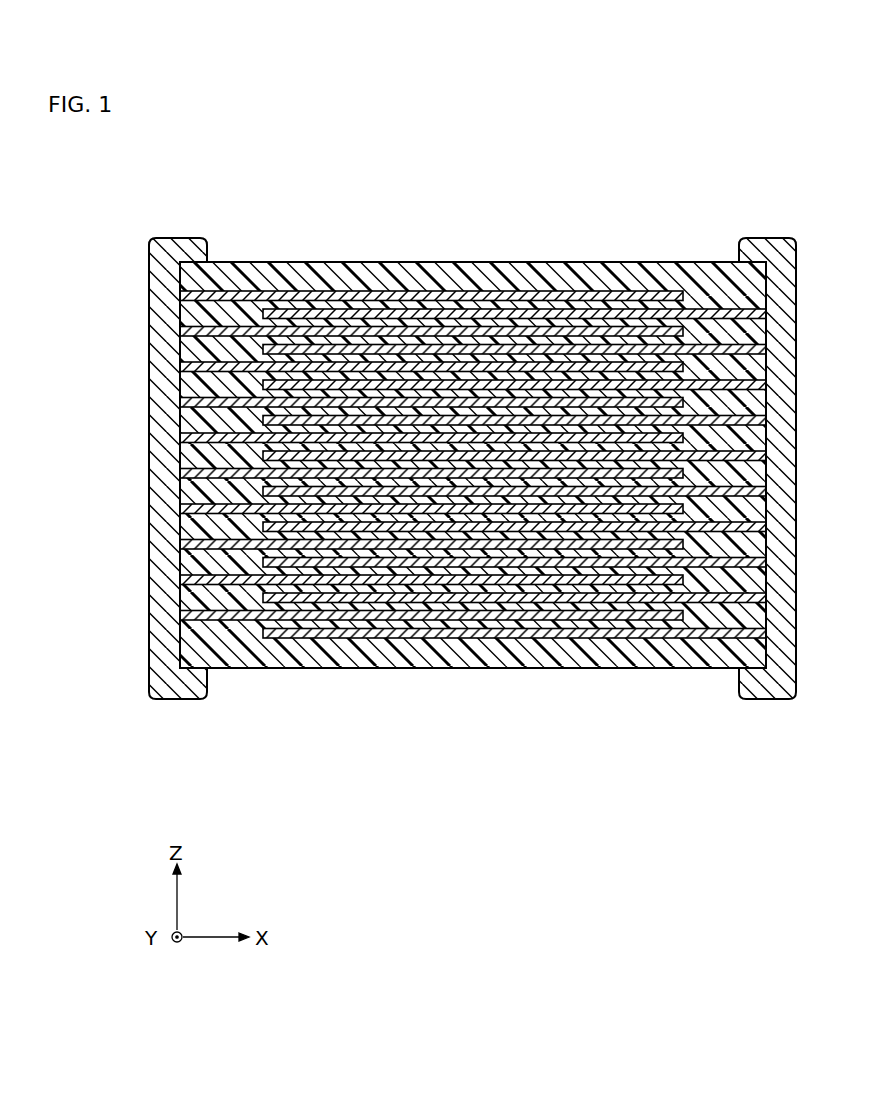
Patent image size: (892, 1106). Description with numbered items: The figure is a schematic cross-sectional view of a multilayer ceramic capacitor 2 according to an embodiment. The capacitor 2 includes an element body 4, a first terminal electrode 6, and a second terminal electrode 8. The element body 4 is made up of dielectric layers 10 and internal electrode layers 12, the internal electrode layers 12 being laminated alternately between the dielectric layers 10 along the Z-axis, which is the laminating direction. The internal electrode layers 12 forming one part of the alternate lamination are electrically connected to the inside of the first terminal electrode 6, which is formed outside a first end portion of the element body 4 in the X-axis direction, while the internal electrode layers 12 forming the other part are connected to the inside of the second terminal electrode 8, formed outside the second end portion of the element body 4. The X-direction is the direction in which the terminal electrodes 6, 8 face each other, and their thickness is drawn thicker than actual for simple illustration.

The multilayer ceramic capacitor 2 is at (472, 474).
The element body 4 is at (622, 669).
The first terminal electrode 6 is at (177, 700).
The second terminal electrode 8 is at (766, 245).
The dielectric layer 10 is at (424, 306).
The internal electrode layer 12 is at (537, 297).